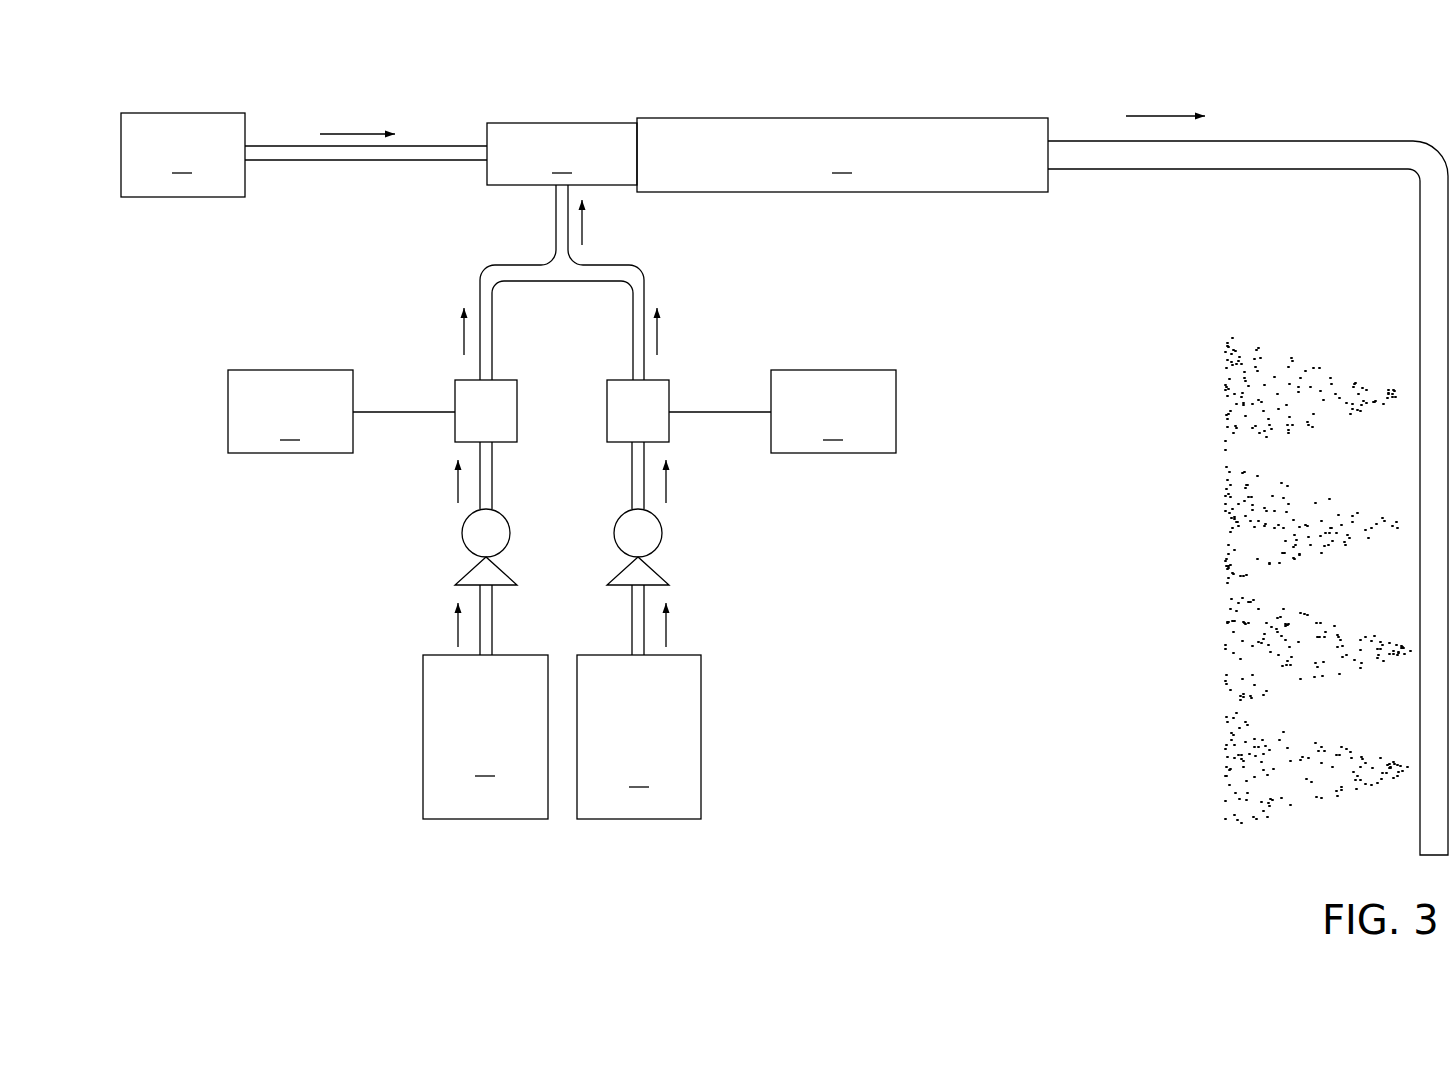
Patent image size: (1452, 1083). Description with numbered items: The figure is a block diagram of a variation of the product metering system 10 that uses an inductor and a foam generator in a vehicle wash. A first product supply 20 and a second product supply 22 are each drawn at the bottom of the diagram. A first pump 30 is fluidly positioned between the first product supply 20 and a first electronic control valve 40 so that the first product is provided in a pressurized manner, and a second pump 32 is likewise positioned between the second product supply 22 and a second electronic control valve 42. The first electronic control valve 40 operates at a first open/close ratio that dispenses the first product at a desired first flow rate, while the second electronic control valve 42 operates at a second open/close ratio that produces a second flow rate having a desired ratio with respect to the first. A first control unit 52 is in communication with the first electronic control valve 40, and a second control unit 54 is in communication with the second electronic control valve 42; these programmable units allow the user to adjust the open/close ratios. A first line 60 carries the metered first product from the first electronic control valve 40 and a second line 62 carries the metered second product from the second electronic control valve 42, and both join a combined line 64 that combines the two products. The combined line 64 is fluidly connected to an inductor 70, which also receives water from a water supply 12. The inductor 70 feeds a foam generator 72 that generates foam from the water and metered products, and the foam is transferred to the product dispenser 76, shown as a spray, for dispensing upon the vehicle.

The product metering system 10 is at (262, 92).
The water supply 12 is at (183, 155).
The first product supply 20 is at (485, 737).
The second product supply 22 is at (639, 737).
The first pump 30 is at (462, 533).
The second pump 32 is at (662, 533).
The first electronic control valve 40 is at (517, 412).
The second electronic control valve 42 is at (607, 410).
The first control unit 52 is at (341, 411).
The second control unit 54 is at (782, 411).
The first line 60 is at (483, 368).
The second line 62 is at (640, 368).
The combined line 64 is at (556, 228).
The inductor 70 is at (562, 154).
The foam generator 72 is at (842, 155).
The product dispenser 76 is at (1420, 380).